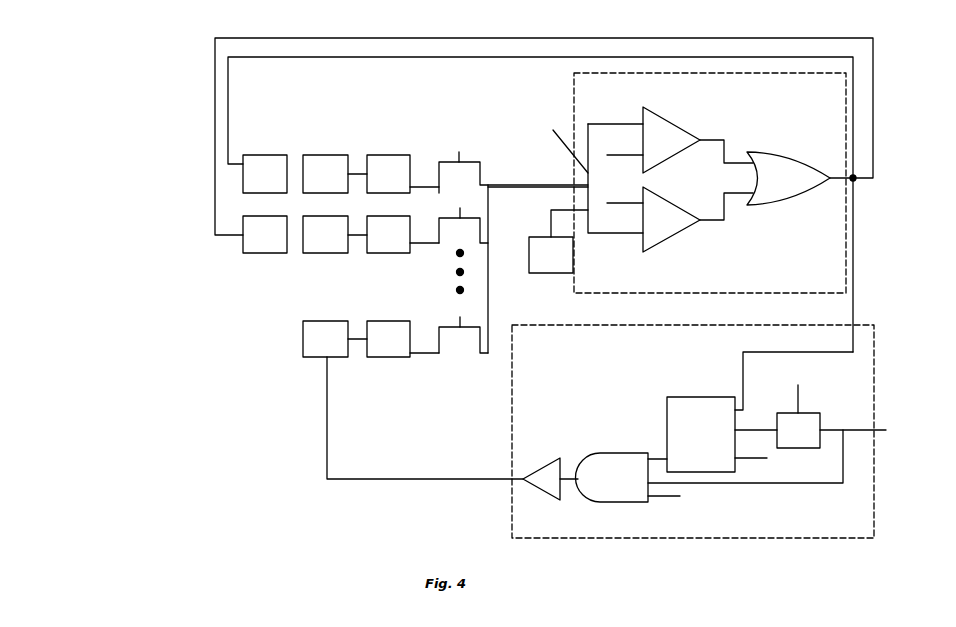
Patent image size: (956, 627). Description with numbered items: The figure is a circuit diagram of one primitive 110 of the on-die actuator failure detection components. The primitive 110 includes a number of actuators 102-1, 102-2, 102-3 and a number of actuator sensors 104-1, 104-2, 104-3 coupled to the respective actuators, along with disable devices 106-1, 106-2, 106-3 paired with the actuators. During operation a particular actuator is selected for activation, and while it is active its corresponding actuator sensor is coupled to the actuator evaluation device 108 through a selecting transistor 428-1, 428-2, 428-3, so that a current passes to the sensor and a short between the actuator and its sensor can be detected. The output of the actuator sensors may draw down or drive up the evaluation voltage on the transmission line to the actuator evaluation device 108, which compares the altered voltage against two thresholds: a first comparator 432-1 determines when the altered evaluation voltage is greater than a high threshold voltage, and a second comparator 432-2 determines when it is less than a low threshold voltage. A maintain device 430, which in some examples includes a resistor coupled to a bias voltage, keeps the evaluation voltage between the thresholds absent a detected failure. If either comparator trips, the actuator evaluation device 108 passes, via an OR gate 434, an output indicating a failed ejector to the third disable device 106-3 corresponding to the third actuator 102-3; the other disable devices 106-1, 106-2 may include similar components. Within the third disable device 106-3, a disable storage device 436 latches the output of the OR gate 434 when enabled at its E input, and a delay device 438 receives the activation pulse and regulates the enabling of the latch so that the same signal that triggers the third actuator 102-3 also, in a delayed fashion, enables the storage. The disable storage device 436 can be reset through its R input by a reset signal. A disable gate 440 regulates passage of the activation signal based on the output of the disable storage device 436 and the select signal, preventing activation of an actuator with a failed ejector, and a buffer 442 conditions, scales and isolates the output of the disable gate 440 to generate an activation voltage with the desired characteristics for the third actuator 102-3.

The primitive 110 is at (96, 80).
The first disable device 106-1 is at (268, 179).
The first actuator 102-1 is at (323, 178).
The first actuator sensor 104-1 is at (388, 166).
The first selecting transistor 428-1 is at (448, 160).
The second selecting transistor 428-2 is at (450, 217).
The second disable device 106-2 is at (271, 237).
The second actuator 102-2 is at (326, 237).
The second actuator sensor 104-2 is at (392, 247).
The third actuator 102-3 is at (328, 344).
The third actuator sensor 104-3 is at (396, 354).
The third selecting transistor 428-3 is at (488, 350).
The actuator evaluation device 108 is at (848, 250).
The first comparator 432-1 is at (668, 140).
The second comparator 432-2 is at (660, 240).
The OR gate 434 is at (788, 192).
The maintain device 430 is at (552, 270).
The third disable device 106-3 is at (873, 490).
The disable storage device 436 is at (700, 402).
The delay device 438 is at (812, 425).
The buffer 442 is at (545, 475).
The disable gate 440 is at (612, 490).